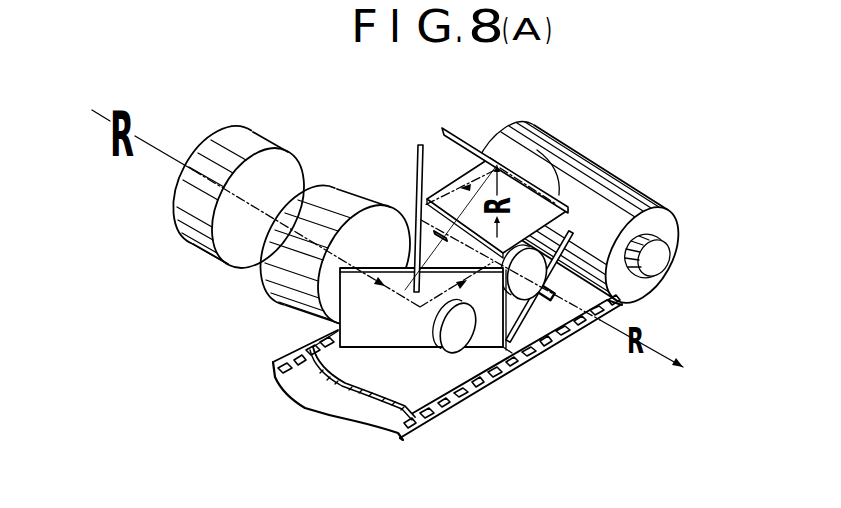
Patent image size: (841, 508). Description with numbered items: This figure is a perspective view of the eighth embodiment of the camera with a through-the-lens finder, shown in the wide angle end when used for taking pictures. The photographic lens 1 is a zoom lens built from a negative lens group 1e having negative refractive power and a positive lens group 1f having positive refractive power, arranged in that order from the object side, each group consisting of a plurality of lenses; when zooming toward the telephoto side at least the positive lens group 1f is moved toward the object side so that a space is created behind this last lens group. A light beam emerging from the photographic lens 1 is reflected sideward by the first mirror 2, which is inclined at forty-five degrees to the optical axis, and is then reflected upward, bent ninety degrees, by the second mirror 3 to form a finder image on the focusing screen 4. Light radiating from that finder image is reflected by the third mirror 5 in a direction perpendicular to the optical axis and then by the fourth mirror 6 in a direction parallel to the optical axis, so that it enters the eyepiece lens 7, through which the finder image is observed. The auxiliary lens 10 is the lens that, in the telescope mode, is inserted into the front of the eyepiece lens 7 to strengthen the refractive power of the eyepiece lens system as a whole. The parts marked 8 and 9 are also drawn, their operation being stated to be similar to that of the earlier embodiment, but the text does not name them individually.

The photographic lens 1 is at (388, 178).
The negative lens group 1e is at (253, 145).
The positive lens group 1f is at (332, 197).
The first mirror 2 is at (420, 338).
The second mirror 3 is at (521, 290).
The focusing screen 4 is at (538, 207).
The third mirror 5 is at (457, 138).
The fourth mirror 6 is at (415, 144).
The eyepiece lens 7 is at (536, 295).
The light sensor 8 is at (548, 303).
The film strip 9 is at (578, 298).
The auxiliary lens 10 is at (453, 342).